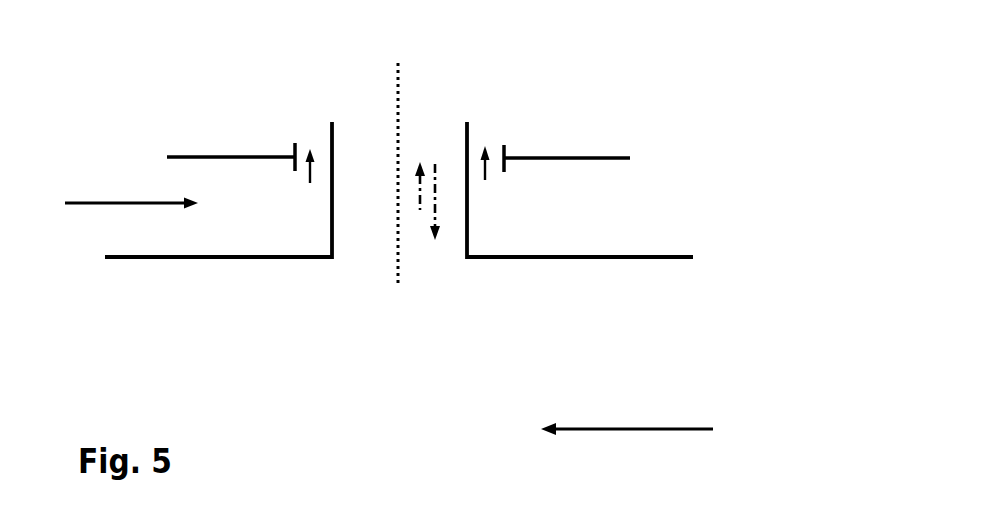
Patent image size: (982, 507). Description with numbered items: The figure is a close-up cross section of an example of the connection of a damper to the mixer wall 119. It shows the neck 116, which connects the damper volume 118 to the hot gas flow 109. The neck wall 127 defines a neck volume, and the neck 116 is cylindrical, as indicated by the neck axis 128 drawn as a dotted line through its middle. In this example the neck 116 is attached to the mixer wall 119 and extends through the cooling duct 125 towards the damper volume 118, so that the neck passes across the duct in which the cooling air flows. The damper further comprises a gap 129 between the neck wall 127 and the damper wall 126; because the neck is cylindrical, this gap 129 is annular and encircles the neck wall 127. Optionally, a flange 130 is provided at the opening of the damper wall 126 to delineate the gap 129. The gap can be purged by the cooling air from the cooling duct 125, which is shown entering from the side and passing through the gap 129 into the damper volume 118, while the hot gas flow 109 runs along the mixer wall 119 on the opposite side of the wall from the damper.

The damper volume 118 is at (508, 30).
The damper wall 126 is at (235, 157).
The cooling duct 125 is at (163, 197).
The neck wall 127 is at (332, 207).
The neck 116 is at (375, 218).
The neck axis 128 is at (398, 279).
The gap 129 is at (484, 162).
The flange 130 is at (507, 153).
The mixer wall 119 is at (632, 253).
The hot gas flow 109 is at (627, 411).